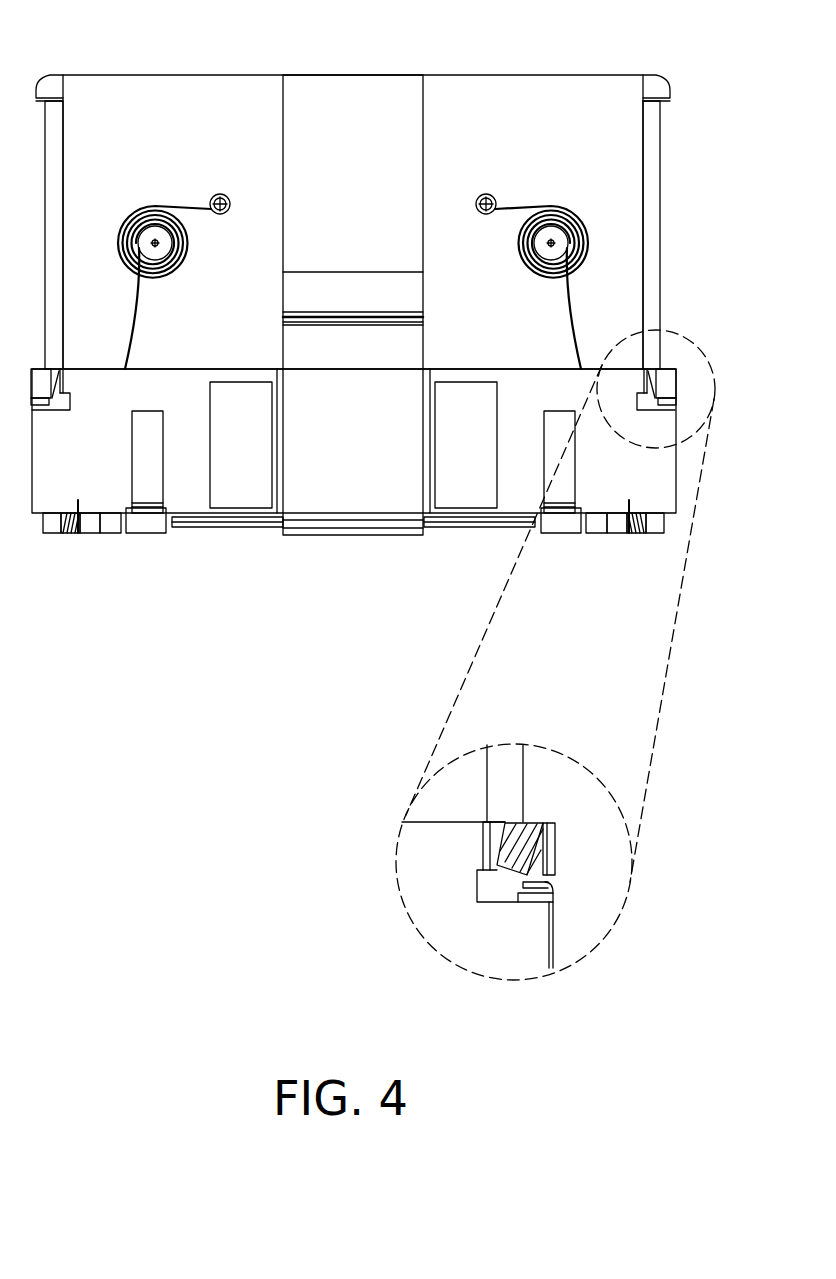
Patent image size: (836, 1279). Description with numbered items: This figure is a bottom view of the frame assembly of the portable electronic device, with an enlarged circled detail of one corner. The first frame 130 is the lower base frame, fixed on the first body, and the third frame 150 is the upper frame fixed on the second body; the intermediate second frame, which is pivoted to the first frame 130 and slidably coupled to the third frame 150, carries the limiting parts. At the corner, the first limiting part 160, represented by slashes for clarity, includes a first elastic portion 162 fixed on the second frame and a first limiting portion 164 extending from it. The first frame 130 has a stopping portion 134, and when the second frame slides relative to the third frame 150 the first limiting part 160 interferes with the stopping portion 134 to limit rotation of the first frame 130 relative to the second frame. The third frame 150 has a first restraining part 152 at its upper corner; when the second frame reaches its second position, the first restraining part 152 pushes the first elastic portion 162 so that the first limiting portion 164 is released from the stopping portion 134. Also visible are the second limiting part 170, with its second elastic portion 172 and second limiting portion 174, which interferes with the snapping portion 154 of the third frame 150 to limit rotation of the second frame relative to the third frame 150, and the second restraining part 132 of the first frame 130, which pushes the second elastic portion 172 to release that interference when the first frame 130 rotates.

The first frame 130 is at (522, 495).
The second restraining part 132 is at (532, 896).
The stopping portion 134 is at (497, 831).
The third frame 150 is at (482, 113).
The first restraining part 152 is at (652, 90).
The snapping portion 154 is at (668, 103).
The first limiting part 160 is at (641, 806).
The first elastic portion 162 is at (555, 845).
The first limiting portion 164 is at (538, 824).
The second limiting part 170 is at (651, 929).
The second elastic portion 172 is at (552, 890).
The second limiting portion 174 is at (546, 864).